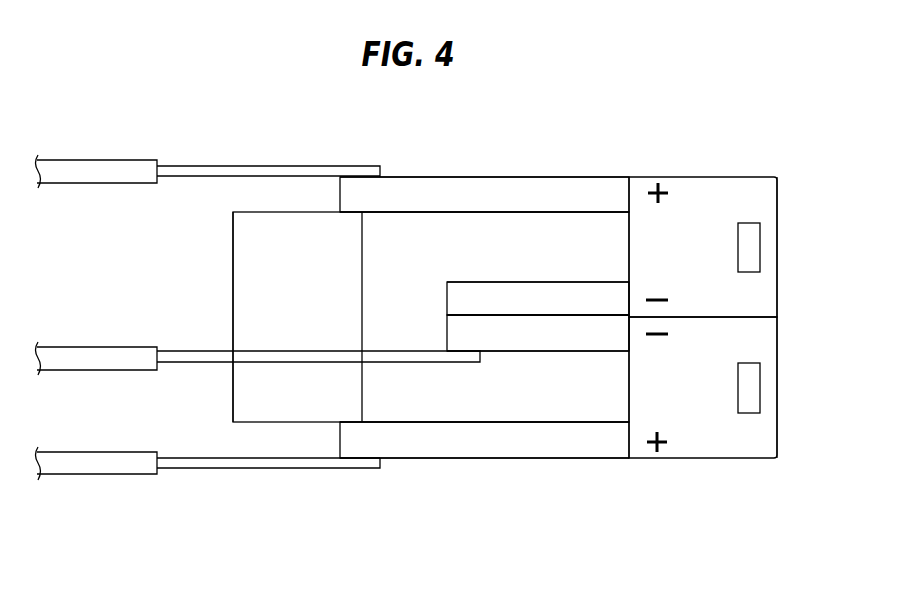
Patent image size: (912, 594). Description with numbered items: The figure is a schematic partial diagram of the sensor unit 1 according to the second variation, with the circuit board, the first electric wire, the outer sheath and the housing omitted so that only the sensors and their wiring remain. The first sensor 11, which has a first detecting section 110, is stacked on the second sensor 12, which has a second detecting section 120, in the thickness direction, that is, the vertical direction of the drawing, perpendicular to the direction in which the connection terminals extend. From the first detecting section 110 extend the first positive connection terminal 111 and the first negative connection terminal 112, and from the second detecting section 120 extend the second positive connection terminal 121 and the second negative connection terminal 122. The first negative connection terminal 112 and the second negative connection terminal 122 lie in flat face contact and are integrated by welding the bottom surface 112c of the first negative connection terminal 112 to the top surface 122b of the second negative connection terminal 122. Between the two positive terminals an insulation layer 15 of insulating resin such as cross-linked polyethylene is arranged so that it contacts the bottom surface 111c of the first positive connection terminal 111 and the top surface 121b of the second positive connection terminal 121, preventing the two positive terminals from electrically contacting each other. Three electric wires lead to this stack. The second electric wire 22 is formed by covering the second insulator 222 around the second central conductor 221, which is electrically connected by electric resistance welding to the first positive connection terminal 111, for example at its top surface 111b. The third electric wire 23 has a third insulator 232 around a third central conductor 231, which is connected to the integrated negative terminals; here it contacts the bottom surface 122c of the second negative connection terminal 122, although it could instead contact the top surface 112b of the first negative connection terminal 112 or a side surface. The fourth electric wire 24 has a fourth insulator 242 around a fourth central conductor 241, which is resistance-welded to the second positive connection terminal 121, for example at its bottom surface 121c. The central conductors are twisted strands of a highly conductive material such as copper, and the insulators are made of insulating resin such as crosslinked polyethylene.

The sensor unit 1 is at (560, 100).
The first sensor 11 is at (782, 185).
The second sensor 12 is at (782, 330).
The first detecting section 110 is at (760, 248).
The second detecting section 120 is at (760, 388).
The insulation layer 15 is at (233, 242).
The first positive connection terminal 111 is at (262, 166).
The top surface of the first positive connection terminal 111b is at (477, 177).
The bottom surface of the first positive connection terminal 111c is at (477, 212).
The first negative connection terminal 112 is at (590, 282).
The top surface of the first negative connection terminal 112b is at (541, 282).
The bottom surface of the first negative connection terminal 112c is at (530, 318).
The second positive connection terminal 121 is at (590, 458).
The top surface of the second positive connection terminal 121b is at (478, 422).
The bottom surface of the second positive connection terminal 121c is at (480, 458).
The second negative connection terminal 122 is at (588, 352).
The top surface of the second negative connection terminal 122b is at (520, 315).
The bottom surface of the second negative connection terminal 122c is at (527, 352).
The second electric wire 22 is at (208, 134).
The second central conductor 221 is at (266, 145).
The second insulator 222 is at (105, 160).
The third electric wire 23 is at (258, 320).
The third central conductor 231 is at (316, 333).
The third insulator 232 is at (105, 347).
The fourth electric wire 24 is at (208, 501).
The fourth central conductor 241 is at (262, 488).
The fourth insulator 242 is at (110, 474).